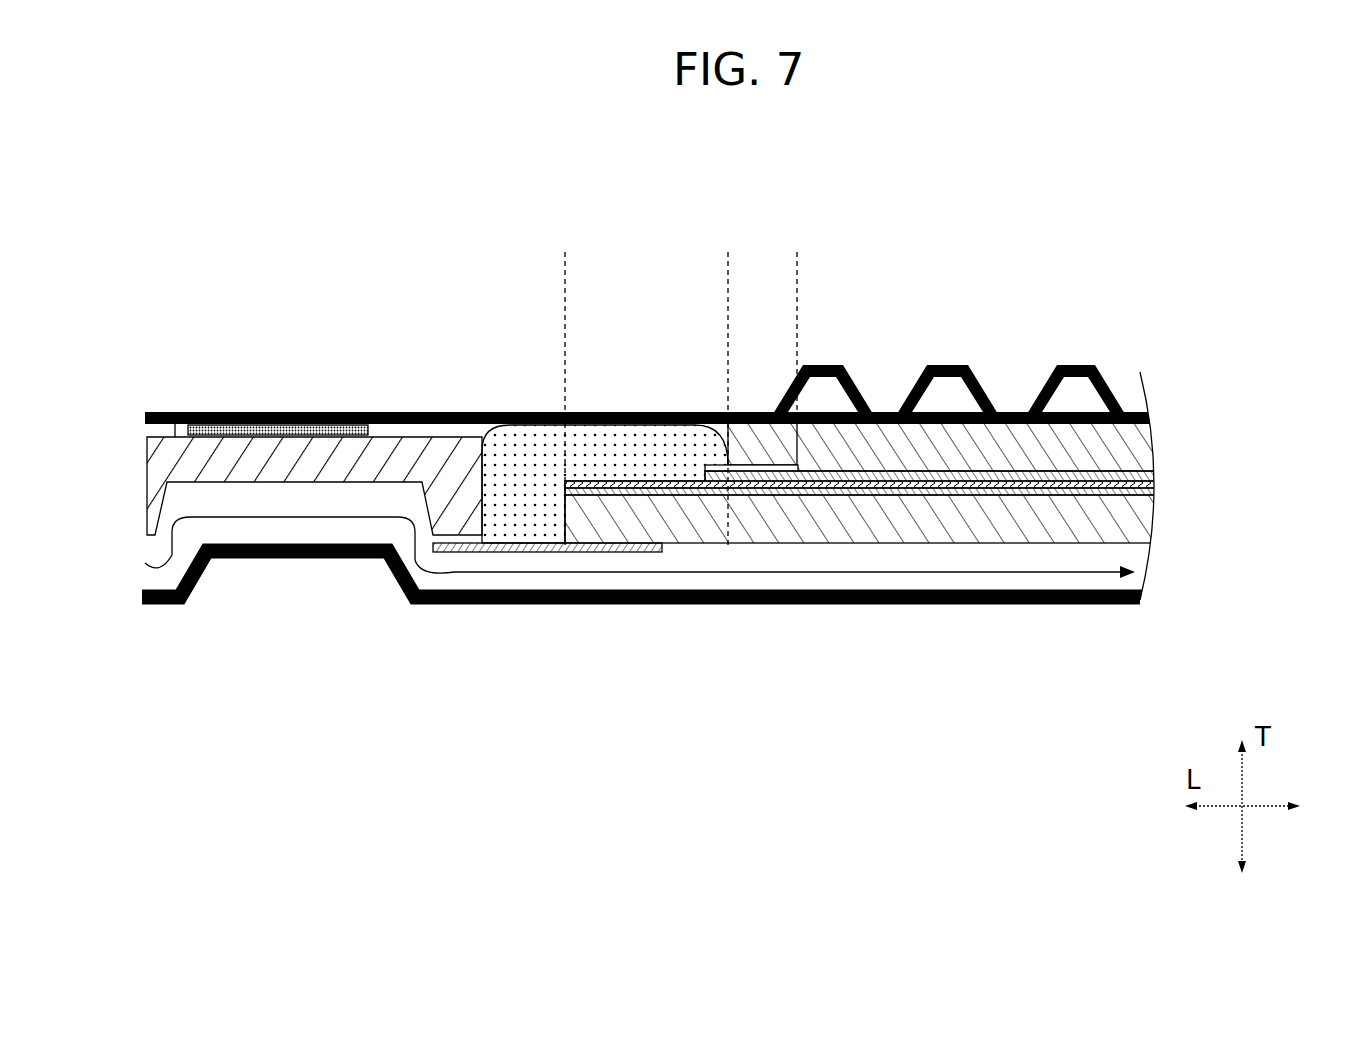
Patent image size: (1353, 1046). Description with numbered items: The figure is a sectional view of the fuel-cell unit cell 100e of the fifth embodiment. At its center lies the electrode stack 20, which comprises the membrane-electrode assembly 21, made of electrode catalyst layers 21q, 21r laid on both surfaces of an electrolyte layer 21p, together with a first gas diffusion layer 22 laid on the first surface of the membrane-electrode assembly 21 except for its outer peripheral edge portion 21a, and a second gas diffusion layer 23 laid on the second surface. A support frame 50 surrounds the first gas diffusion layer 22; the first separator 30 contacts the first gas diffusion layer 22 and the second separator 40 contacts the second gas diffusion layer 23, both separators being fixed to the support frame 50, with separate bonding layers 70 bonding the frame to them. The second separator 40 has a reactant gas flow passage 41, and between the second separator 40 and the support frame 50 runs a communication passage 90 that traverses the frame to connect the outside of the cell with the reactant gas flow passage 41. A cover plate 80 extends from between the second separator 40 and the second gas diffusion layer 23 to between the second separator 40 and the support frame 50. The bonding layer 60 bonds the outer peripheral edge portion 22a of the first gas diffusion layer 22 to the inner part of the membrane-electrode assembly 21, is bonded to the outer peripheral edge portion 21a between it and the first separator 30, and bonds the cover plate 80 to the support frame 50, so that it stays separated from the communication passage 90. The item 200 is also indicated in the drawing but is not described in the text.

The fuel-cell unit cell 100e is at (519, 308).
The electrode stack 20 is at (959, 478).
The membrane-electrode assembly 21 is at (931, 485).
The electrode catalyst layer 21q is at (1147, 475).
The electrolyte layer 21p is at (1147, 485).
The electrode catalyst layer 21r is at (1148, 492).
The outer peripheral edge portion of the membrane-electrode assembly 21a is at (728, 293).
The first gas diffusion layer 22 is at (1145, 452).
The outer peripheral edge portion of the first gas diffusion layer 22a is at (797, 293).
The second gas diffusion layer 23 is at (1137, 522).
The first separator 30 is at (397, 412).
The second separator 40 is at (552, 605).
The reactant gas flow passage 41 is at (922, 580).
The support frame 50 is at (172, 412).
The bonding layer 60 is at (513, 453).
The bonding layer 70 is at (288, 412).
The cover plate 80 is at (645, 552).
The communication passage 90 is at (298, 527).
The flexible wiring board 200 is at (483, 578).